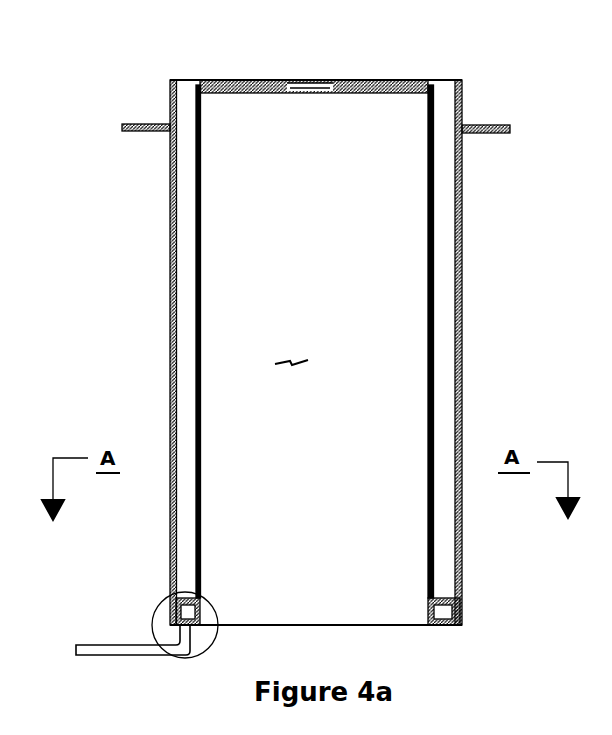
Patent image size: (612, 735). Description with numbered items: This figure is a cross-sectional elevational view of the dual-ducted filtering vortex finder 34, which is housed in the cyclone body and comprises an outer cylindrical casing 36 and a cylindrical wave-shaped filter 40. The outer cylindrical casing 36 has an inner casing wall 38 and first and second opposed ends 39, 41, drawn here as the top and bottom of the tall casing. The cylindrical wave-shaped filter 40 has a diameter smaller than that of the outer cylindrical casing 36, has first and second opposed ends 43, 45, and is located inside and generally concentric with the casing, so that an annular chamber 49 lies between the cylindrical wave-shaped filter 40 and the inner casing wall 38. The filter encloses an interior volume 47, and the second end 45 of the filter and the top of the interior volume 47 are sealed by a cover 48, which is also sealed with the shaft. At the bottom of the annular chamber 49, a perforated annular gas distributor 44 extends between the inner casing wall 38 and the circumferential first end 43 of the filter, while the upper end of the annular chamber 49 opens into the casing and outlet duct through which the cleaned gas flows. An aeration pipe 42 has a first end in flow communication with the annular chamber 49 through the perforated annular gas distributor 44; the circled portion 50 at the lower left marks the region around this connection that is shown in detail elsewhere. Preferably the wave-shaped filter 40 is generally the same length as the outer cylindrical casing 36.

The dual-ducted filtering vortex finder 34 is at (160, 75).
The outer cylindrical casing 36 is at (172, 304).
The inner casing wall 38 is at (458, 285).
The first end 39 is at (462, 84).
The cylindrical wave-shaped filter 40 is at (196, 380).
The second end 41 is at (458, 618).
The aeration pipe 42 is at (148, 655).
The first end 43 is at (426, 598).
The perforated annular gas distributor 44 is at (174, 600).
The second end 45 is at (428, 96).
The interior volume 47 is at (291, 345).
The cover 48 is at (244, 80).
The annular chamber 49 is at (183, 210).
The detail region 50 is at (165, 605).